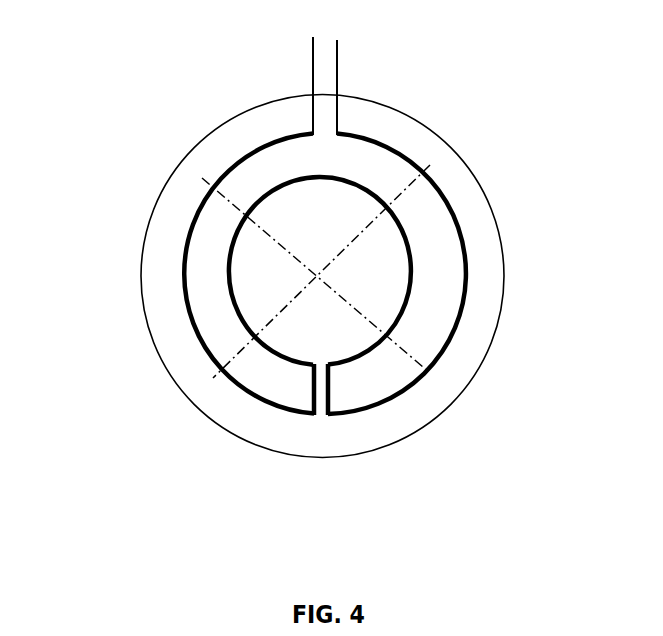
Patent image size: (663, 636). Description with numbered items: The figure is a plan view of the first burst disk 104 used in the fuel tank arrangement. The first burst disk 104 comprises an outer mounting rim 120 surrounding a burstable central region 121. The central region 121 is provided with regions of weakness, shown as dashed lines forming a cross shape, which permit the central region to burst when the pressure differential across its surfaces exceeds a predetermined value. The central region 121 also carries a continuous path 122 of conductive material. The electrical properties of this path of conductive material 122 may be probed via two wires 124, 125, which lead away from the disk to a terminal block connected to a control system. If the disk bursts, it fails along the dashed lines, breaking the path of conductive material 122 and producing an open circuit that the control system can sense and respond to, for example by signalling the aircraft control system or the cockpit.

The first burst disk 104 is at (178, 113).
The outer mounting rim 120 is at (468, 163).
The burstable central region 121 is at (202, 272).
The continuous path of conductive material 122 is at (393, 150).
The wire 124 is at (312, 65).
The wire 125 is at (338, 65).